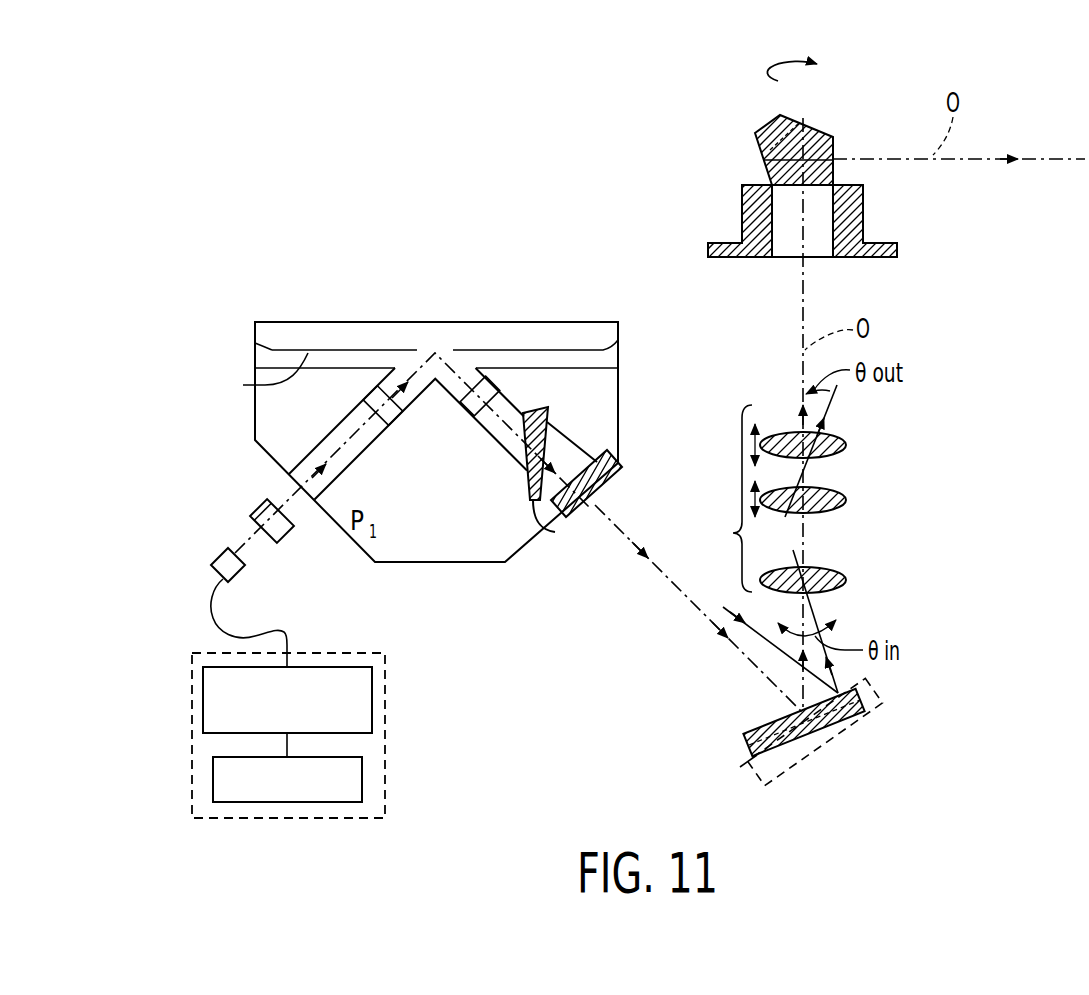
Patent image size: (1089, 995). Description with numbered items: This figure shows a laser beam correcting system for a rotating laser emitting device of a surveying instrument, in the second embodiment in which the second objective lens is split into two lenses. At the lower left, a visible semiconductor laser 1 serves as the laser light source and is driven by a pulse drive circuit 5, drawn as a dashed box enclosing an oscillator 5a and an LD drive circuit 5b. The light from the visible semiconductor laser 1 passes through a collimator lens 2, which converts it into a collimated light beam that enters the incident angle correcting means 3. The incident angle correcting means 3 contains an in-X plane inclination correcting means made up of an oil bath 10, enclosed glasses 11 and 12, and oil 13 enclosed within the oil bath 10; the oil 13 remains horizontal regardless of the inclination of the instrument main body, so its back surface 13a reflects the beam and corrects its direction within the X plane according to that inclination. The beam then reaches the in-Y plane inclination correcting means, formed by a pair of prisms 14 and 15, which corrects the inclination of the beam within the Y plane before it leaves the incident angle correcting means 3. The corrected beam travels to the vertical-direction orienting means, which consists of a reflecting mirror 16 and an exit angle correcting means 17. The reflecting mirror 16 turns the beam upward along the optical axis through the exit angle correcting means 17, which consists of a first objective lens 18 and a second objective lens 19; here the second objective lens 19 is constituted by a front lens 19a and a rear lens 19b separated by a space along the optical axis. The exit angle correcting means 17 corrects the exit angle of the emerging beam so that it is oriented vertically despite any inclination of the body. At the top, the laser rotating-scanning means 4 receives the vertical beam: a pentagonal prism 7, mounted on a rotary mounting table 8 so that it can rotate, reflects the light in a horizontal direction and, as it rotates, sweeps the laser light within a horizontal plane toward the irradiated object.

The visible semiconductor laser 1 is at (240, 570).
The collimator lens 2 is at (283, 537).
The incident angle correcting means 3 is at (482, 580).
The laser rotating-scanning means 4 is at (735, 157).
The pulse drive circuit 5 is at (319, 735).
The oscillator 5a is at (363, 783).
The LD drive circuit 5b is at (372, 713).
The pentagonal prism 7 is at (822, 140).
The rotary mounting table 8 is at (743, 220).
The oil bath 10 is at (342, 328).
The enclosed glass 11 is at (398, 423).
The enclosed glass 12 is at (503, 387).
The oil 13 is at (608, 357).
The back surface of the oil 13a is at (256, 377).
The prism 14 is at (555, 532).
The prism 15 is at (615, 467).
The reflecting mirror 16 is at (828, 762).
The exit angle correcting means 17 is at (728, 498).
The first objective lens 18 is at (847, 578).
The second objective lens 19 is at (864, 462).
The front lens 19a is at (847, 445).
The rear lens 19b is at (835, 494).